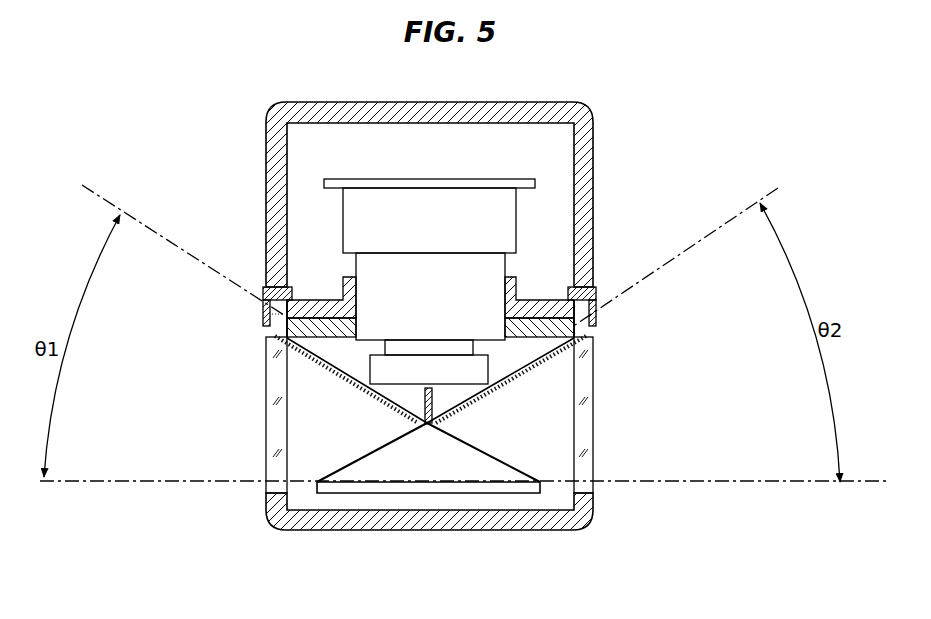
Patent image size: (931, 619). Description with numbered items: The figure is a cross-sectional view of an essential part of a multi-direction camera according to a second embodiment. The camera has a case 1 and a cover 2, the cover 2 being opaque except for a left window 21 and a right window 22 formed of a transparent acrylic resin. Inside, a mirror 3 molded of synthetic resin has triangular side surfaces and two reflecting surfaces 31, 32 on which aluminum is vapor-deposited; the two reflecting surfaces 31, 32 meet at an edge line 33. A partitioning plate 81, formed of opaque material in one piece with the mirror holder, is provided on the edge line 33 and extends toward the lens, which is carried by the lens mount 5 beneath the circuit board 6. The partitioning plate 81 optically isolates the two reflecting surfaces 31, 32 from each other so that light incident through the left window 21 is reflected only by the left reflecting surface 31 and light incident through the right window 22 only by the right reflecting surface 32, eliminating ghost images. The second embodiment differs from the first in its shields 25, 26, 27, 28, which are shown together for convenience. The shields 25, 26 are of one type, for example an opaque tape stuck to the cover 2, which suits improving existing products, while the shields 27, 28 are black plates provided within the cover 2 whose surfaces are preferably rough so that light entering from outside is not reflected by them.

The case 1 is at (322, 98).
The cover 2 is at (320, 534).
The mirror 3 is at (428, 498).
The lens mount 5 is at (497, 205).
The circuit board 6 is at (381, 179).
The left window 21 is at (268, 446).
The right window 22 is at (587, 424).
The shield 25 is at (263, 312).
The shield 26 is at (598, 320).
The shield 27 is at (280, 347).
The shield 28 is at (540, 330).
The left reflecting surface 31 is at (345, 467).
The right reflecting surface 32 is at (513, 467).
The edge line 33 is at (428, 432).
The partitioning plate 81 is at (433, 400).